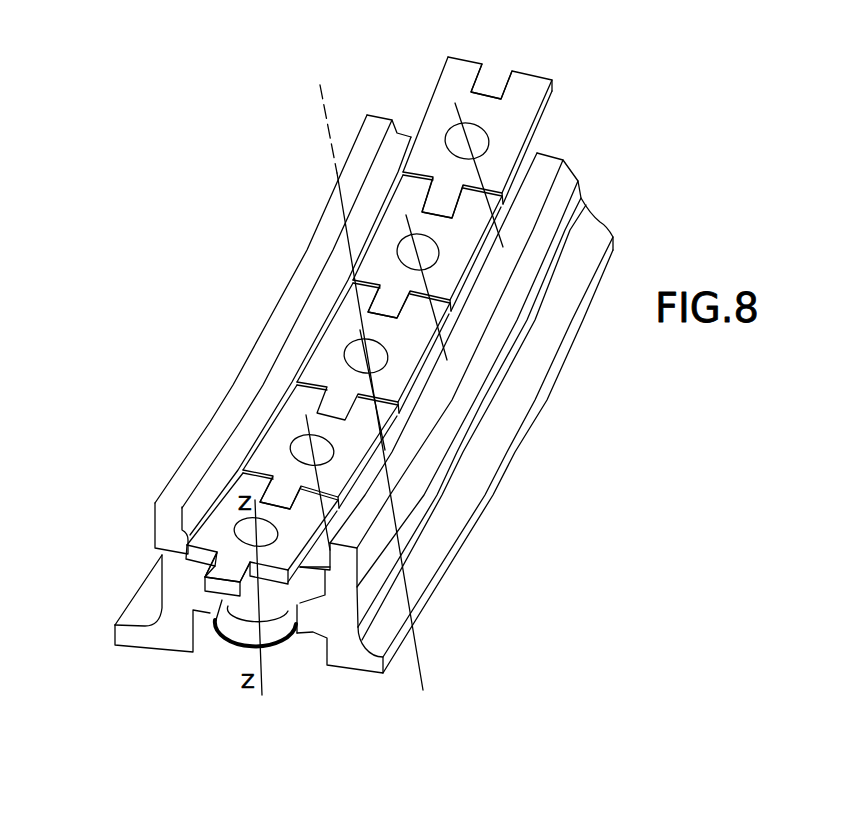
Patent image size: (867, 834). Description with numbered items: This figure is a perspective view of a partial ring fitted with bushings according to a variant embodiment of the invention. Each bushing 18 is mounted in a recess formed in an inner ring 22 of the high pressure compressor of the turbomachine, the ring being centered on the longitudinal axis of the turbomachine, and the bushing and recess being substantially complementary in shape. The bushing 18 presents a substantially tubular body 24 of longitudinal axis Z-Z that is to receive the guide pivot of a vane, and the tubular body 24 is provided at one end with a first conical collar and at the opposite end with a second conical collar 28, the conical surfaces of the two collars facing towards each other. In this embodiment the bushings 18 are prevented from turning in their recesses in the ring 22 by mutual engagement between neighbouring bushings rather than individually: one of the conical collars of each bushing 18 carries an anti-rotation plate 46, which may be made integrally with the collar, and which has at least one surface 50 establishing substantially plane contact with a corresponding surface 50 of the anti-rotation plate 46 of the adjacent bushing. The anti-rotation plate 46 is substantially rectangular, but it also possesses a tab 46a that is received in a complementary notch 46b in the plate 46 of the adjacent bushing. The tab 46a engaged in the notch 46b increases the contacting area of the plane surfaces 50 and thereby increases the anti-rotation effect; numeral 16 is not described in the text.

The drive unit 16 is at (325, 4).
The bushing 18 is at (225, 652).
The inner ring 22 is at (587, 237).
The tubular body 24 is at (277, 605).
The second conical collar 28 is at (287, 637).
The anti-rotation plate 46 is at (443, 100).
The tab 46a is at (438, 202).
The notch 46b is at (498, 82).
The surface 50 is at (320, 385).